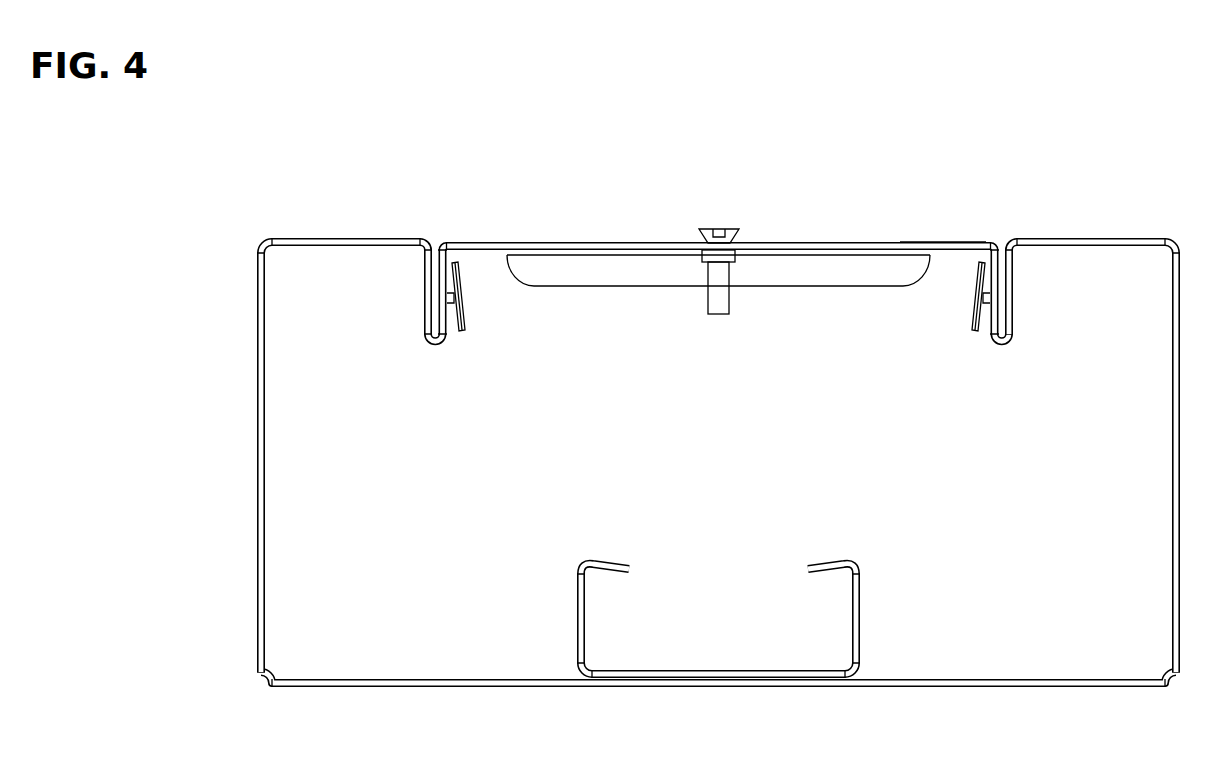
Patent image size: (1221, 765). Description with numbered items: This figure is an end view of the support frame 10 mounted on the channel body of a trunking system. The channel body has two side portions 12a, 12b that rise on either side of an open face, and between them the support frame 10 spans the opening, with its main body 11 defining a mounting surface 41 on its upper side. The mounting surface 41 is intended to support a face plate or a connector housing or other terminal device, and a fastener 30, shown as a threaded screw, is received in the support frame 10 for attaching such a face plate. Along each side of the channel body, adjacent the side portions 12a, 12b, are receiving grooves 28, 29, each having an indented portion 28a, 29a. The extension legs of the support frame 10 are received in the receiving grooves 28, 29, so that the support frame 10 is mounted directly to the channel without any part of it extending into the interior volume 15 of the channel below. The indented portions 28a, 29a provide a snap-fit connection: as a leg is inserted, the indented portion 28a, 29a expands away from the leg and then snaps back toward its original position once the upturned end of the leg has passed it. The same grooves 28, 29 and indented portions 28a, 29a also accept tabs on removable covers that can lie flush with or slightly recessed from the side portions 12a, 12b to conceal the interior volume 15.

The support frame 10 is at (485, 243).
The main body 11 is at (843, 250).
The side portion 12a is at (305, 238).
The side portion 12b is at (1085, 238).
The interior volume 15 is at (700, 631).
The receiving groove 28 is at (432, 346).
The indented portion 28a is at (452, 291).
The receiving groove 29 is at (980, 343).
The indented portion 29a is at (980, 287).
The fastener 30 is at (717, 300).
The mounting surface 41 is at (950, 243).